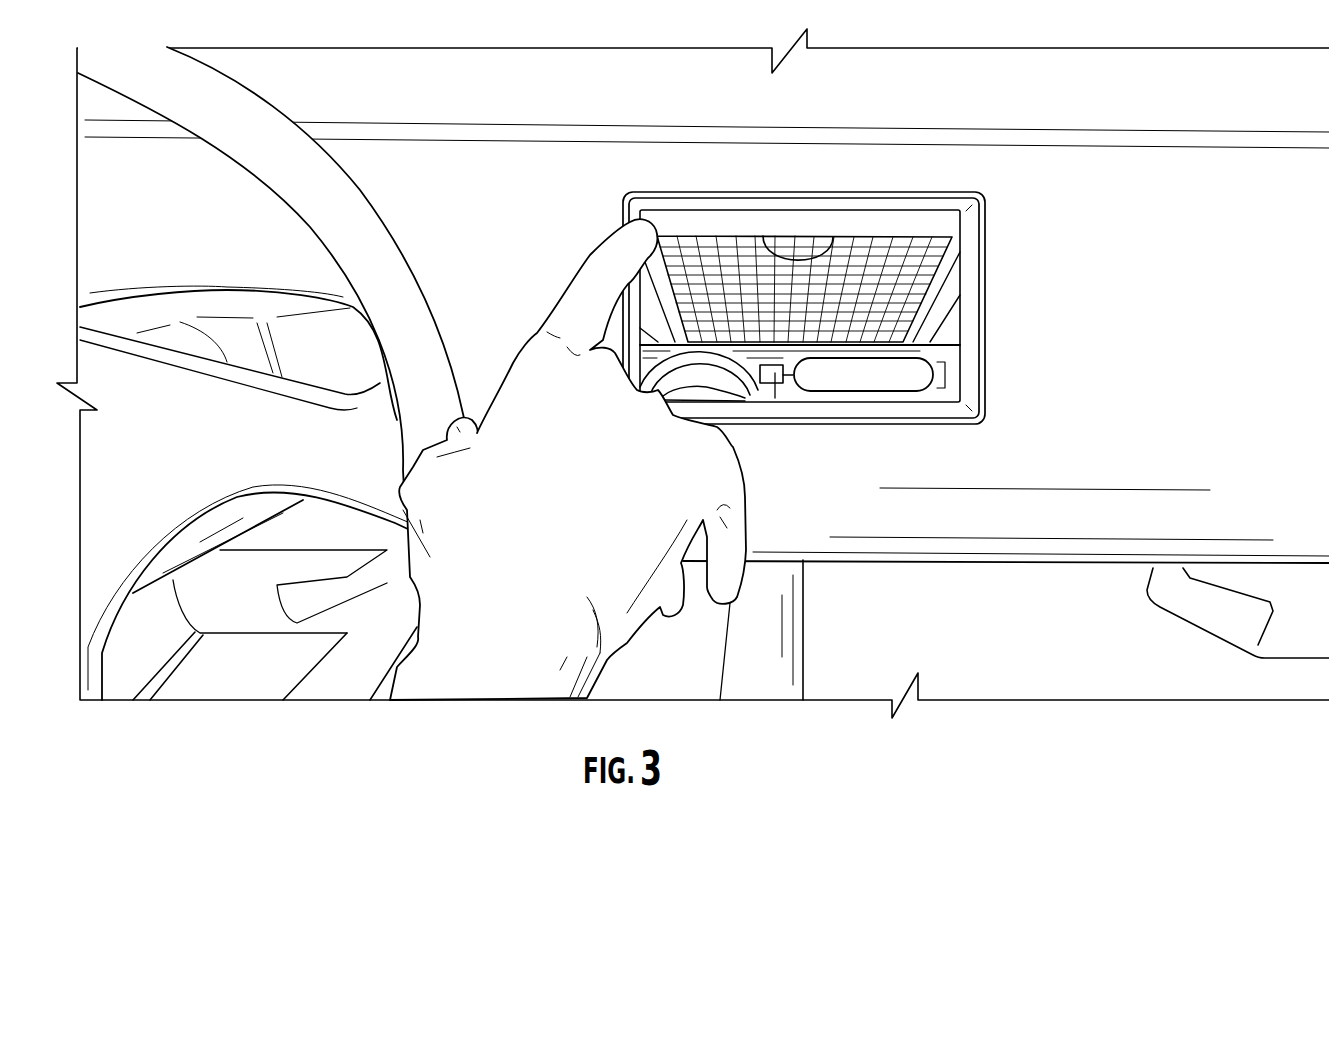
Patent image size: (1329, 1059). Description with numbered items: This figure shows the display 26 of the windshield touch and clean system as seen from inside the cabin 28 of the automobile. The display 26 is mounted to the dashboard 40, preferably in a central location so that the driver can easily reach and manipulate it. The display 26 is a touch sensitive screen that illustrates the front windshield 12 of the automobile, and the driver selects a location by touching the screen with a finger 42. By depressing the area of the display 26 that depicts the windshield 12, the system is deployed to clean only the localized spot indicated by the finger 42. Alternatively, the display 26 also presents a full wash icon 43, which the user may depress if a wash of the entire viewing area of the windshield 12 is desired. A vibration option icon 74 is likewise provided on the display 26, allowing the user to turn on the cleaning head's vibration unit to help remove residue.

The windshield 12 is at (855, 268).
The display 26 is at (947, 313).
The cabin 28 is at (707, 193).
The dashboard 40 is at (1186, 358).
The finger 42 is at (632, 240).
The full wash icon 43 is at (920, 382).
The vibration option icon 74 is at (777, 396).